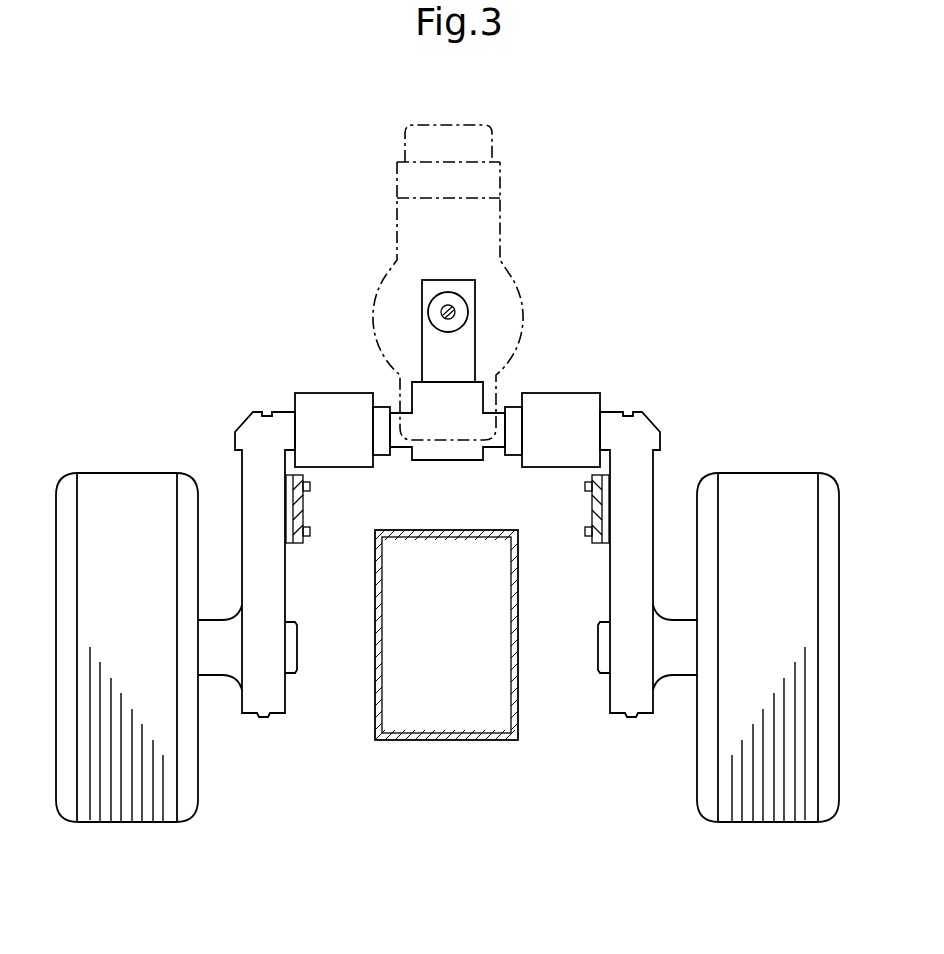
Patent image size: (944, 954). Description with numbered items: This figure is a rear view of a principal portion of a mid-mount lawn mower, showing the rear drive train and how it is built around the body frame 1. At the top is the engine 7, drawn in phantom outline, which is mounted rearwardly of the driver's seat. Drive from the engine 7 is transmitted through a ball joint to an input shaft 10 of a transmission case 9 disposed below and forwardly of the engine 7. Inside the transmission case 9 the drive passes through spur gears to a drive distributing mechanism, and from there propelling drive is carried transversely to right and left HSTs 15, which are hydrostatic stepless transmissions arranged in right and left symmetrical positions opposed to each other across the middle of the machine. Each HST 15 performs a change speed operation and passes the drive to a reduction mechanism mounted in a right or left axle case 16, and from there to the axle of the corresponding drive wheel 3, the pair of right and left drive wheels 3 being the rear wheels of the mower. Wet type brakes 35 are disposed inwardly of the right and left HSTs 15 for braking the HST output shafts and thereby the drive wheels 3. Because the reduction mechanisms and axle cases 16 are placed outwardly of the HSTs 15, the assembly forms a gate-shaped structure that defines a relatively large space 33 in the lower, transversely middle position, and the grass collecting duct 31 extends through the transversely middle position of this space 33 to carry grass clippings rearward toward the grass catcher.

The body frame 1 is at (313, 548).
The drive wheels 3 is at (105, 490).
The engine 7 is at (485, 235).
The transmission case 9 is at (446, 462).
The input shaft 10 is at (452, 310).
The HSTs (hydrostatic stepless transmissions) 15 is at (333, 408).
The axle case 16 is at (255, 493).
The grass collecting duct 31 is at (437, 742).
The space 33 is at (558, 594).
The wet type brakes 35 is at (383, 457).